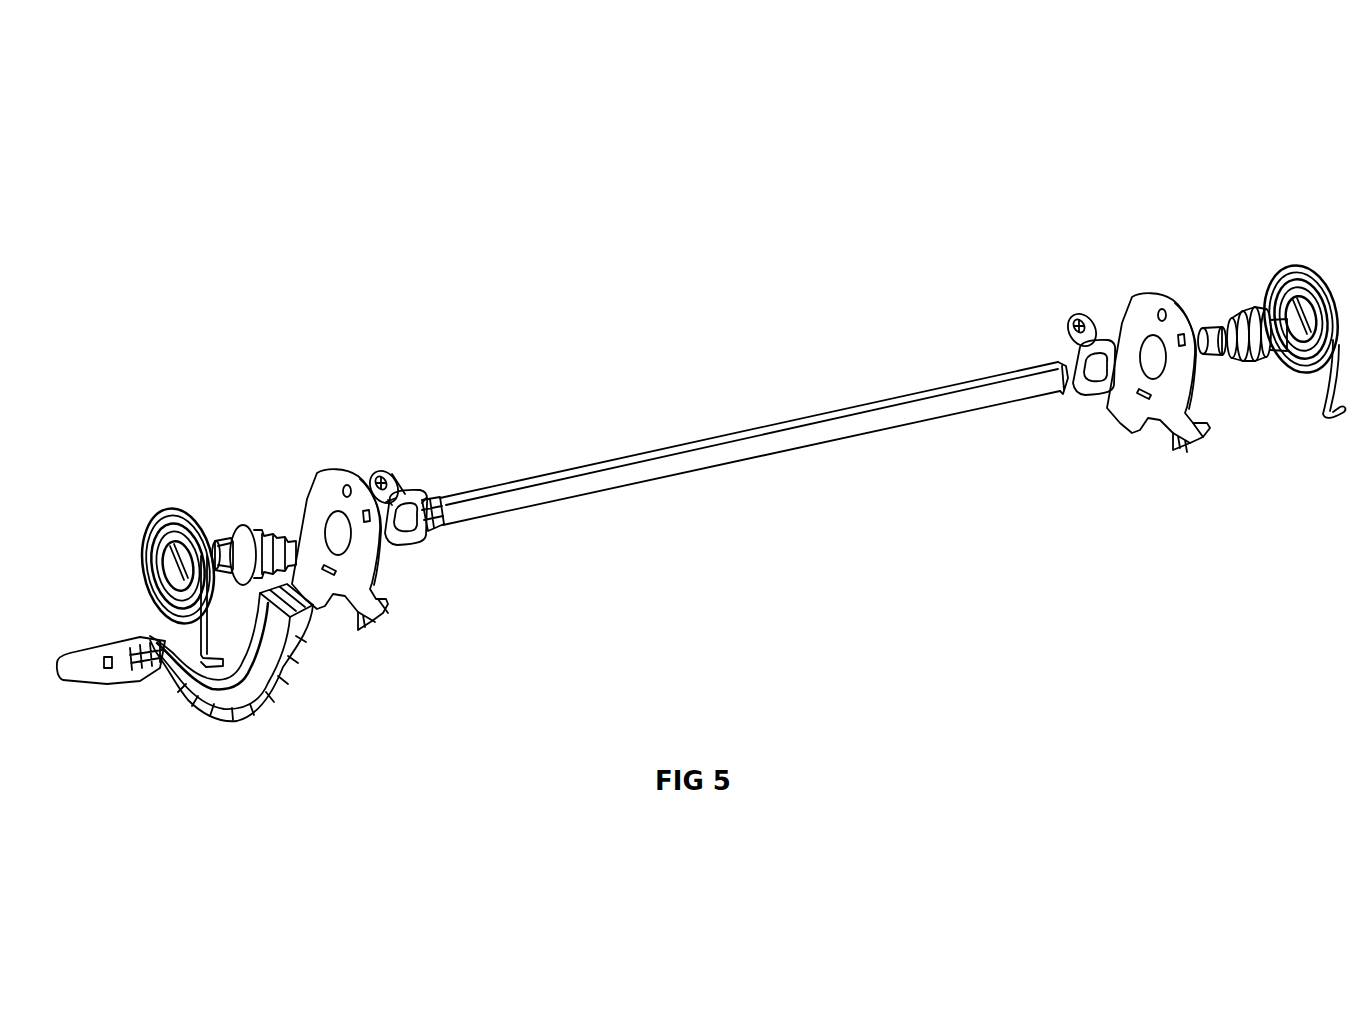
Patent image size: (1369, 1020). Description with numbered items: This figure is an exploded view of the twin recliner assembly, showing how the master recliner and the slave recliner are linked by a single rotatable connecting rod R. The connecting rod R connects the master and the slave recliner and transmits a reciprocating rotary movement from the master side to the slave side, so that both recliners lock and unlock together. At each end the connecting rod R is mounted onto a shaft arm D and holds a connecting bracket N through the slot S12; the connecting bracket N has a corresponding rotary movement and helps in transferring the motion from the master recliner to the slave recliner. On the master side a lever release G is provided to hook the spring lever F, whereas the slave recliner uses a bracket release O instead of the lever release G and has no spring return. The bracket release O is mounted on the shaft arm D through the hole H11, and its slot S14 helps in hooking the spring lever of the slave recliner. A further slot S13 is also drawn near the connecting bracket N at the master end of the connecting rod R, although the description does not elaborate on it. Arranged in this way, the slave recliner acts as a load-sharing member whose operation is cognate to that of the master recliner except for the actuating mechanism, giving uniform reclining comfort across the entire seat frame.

The lever release G is at (363, 575).
The washer S13 is at (379, 478).
The connecting bracket N is at (418, 492).
The slot S12 is at (437, 527).
The connecting rod R is at (963, 413).
The hole H11 is at (1147, 343).
The bracket release O is at (1155, 293).
The slot S14 is at (1193, 457).
The shaft arm D is at (1252, 300).
The spring lever F is at (1307, 262).